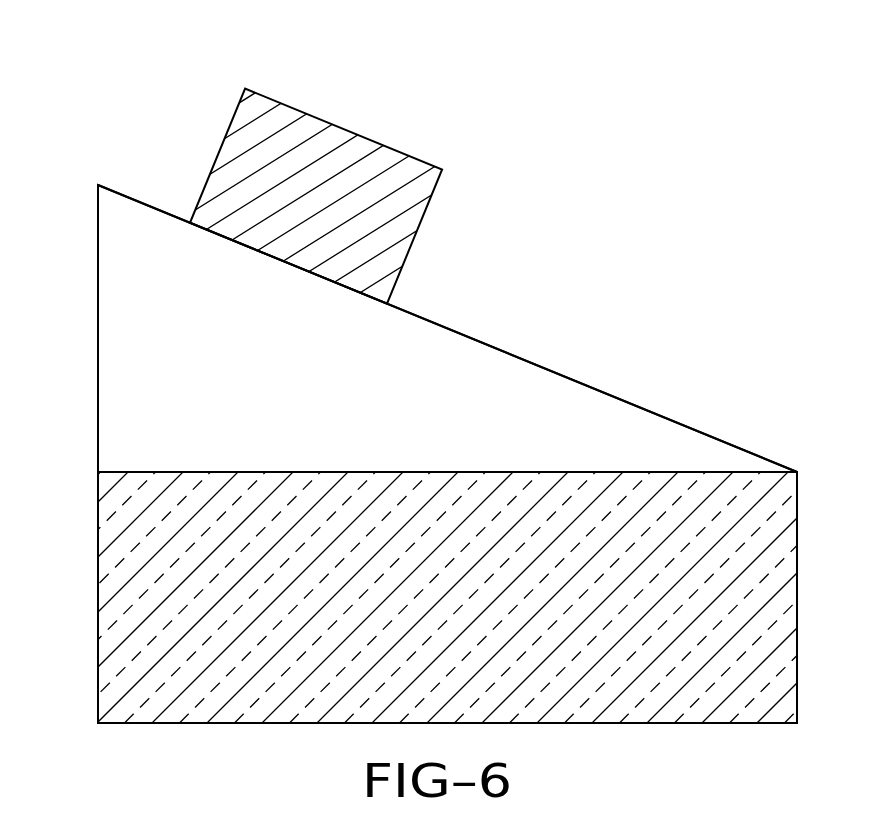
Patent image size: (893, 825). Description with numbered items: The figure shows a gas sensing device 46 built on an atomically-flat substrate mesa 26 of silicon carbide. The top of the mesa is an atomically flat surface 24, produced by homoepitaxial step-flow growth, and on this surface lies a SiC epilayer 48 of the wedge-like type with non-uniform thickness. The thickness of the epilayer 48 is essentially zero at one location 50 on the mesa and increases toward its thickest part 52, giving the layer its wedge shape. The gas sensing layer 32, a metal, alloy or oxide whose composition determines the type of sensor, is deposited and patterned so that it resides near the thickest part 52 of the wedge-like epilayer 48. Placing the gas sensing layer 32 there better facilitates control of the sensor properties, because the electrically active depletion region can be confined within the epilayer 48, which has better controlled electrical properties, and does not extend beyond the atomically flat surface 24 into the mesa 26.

The atomically flat surface 24 is at (478, 342).
The atomically-flat substrate mesa 26 is at (762, 598).
The gas sensing layer 32 is at (358, 150).
The gas sensing device 46 is at (640, 120).
The SiC epilayer 48 is at (553, 405).
The location 50 is at (797, 472).
The thickest part 52 is at (125, 312).